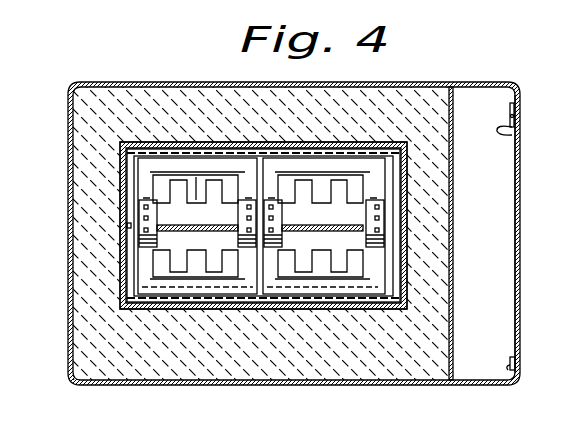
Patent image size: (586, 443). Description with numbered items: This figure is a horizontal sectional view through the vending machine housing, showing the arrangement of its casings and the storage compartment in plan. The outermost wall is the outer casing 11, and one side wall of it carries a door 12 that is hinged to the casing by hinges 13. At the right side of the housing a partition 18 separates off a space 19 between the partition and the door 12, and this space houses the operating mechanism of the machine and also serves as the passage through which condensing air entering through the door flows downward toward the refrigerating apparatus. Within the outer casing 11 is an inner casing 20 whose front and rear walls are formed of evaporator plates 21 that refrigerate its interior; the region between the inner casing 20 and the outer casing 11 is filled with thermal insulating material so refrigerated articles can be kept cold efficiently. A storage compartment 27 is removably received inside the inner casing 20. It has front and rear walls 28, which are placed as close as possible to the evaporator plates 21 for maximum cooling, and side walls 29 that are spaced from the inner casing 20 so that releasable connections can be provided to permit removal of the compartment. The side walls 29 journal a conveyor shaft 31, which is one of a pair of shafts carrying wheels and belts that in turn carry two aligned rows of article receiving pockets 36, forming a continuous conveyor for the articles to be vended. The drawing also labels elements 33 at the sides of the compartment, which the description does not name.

The outer casing 11 is at (181, 387).
The door 12 is at (516, 197).
The hinges 13 is at (512, 134).
The partition 18 is at (453, 285).
The space 19 is at (492, 222).
The inner casing 20 is at (118, 243).
The evaporator plates 21 is at (186, 145).
The storage compartment 27 is at (312, 300).
The front and rear walls 28 is at (254, 150).
The side walls 29 is at (132, 185).
The conveyor shaft 31 is at (317, 277).
The clamp 33 is at (157, 215).
The article receiving pockets 36 is at (203, 277).